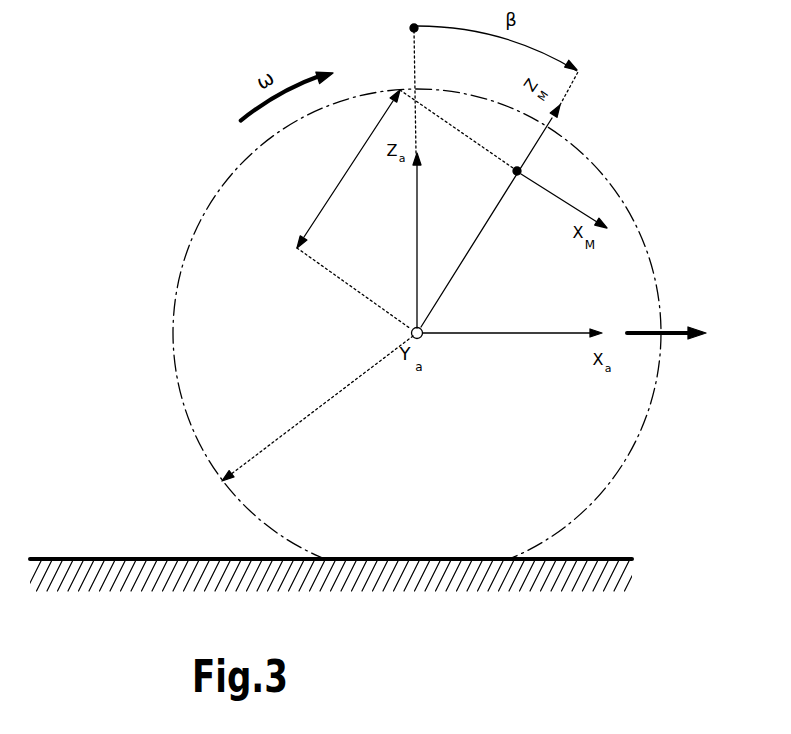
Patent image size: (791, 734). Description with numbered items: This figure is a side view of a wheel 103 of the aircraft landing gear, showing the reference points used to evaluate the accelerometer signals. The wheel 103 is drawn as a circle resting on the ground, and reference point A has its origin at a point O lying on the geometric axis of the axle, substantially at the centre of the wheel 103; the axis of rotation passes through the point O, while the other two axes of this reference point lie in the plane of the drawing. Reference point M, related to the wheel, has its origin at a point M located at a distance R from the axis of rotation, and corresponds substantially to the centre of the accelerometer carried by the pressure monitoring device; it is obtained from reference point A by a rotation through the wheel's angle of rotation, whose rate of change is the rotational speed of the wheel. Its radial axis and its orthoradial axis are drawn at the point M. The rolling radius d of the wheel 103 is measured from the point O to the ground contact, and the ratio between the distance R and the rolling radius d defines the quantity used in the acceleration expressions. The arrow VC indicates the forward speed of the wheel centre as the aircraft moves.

The wheel 103 is at (402, 333).
The point O is at (411, 336).
The point M is at (513, 174).
The distance R is at (354, 209).
The rolling radius d is at (317, 408).
The wheel center velocity VC is at (672, 318).